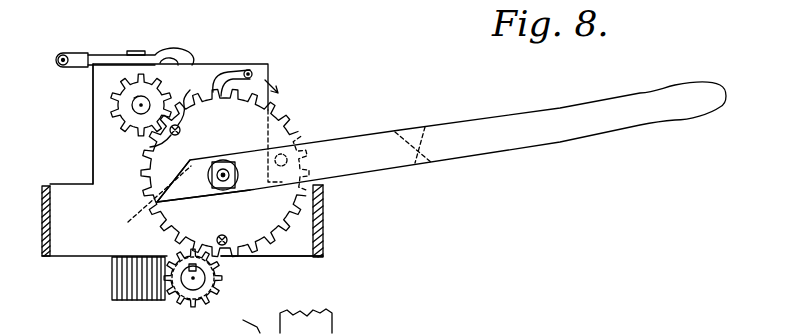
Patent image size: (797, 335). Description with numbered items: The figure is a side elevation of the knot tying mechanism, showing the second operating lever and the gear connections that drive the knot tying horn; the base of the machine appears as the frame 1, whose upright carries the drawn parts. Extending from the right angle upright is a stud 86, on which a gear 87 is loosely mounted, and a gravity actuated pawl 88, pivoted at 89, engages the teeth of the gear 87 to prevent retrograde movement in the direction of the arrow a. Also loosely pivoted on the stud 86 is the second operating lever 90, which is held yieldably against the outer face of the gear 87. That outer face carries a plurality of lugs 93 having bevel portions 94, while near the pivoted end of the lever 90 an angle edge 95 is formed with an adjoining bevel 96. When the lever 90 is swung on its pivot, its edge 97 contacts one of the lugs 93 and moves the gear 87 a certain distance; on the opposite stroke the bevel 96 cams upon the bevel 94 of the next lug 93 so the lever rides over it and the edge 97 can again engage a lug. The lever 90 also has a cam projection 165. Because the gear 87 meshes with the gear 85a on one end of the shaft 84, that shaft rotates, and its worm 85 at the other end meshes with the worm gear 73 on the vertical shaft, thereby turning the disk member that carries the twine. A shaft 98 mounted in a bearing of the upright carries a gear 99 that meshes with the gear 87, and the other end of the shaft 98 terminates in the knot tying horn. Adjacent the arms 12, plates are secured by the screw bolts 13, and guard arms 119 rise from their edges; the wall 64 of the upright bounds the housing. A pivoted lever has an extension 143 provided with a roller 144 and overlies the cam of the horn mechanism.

The frame 1 is at (45, 257).
The arms 12 is at (42, 218).
The screw bolts 13 is at (247, 257).
The housing wall 64 is at (93, 81).
The worm gear 73 is at (125, 300).
The shaft 84 is at (182, 309).
The worm 85 is at (214, 303).
The gear 85a is at (222, 284).
The stud 86 is at (223, 167).
The gear 87 is at (283, 112).
The pawl 88 is at (230, 72).
The pivot 89 is at (252, 71).
The second operating lever 90 is at (537, 110).
The lugs 93 is at (189, 98).
The bevel portions 94 is at (150, 147).
The angle edge 95 is at (192, 159).
The bevel 96 is at (148, 246).
The edge 97 is at (167, 203).
The shaft 98 is at (143, 100).
The gear 99 is at (115, 108).
The guard arms 119 is at (333, 333).
The extension 143 is at (65, 42).
The roller 144 is at (80, 55).
The cam projection 165 is at (424, 127).
The arrow a is at (276, 75).